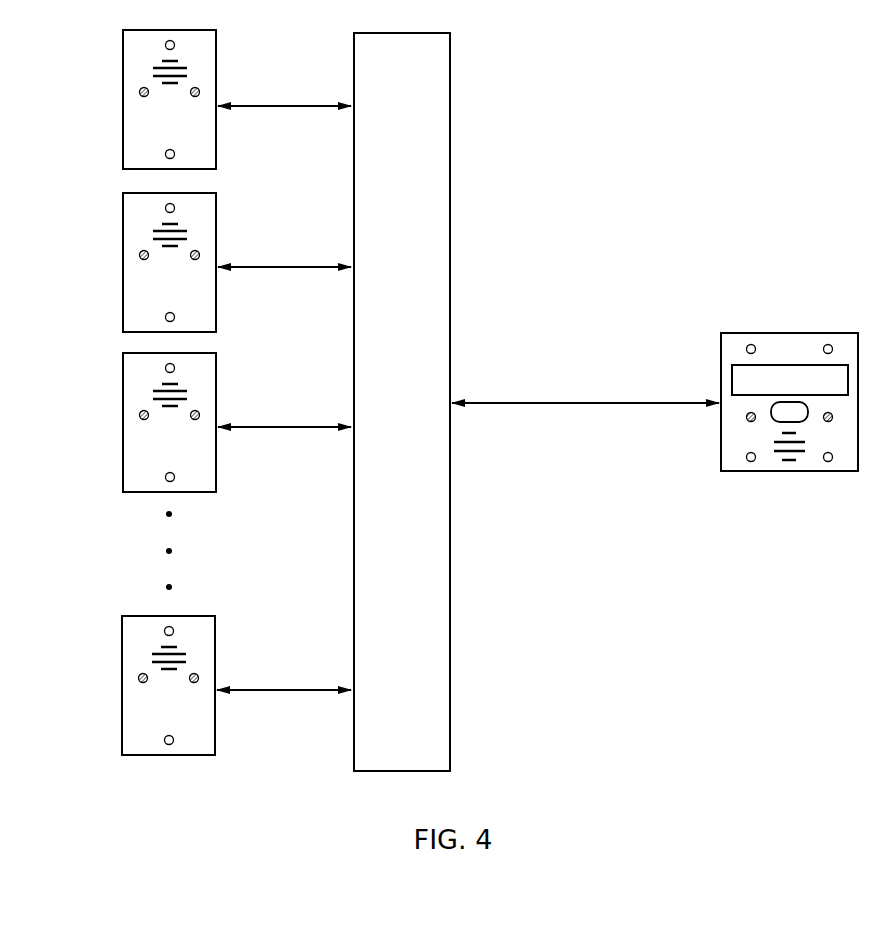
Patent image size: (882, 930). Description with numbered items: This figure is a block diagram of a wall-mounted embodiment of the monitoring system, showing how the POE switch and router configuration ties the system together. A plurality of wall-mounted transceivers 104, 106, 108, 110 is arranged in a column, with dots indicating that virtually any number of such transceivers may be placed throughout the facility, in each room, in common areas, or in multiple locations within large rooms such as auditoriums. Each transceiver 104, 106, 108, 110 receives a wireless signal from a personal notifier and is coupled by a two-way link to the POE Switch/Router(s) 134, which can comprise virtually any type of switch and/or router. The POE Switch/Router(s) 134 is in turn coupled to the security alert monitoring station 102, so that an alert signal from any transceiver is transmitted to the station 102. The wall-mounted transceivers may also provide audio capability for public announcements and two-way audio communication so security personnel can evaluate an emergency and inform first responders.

The security alert station 102 is at (786, 333).
The transceiver 104 is at (123, 106).
The transceiver 106 is at (123, 267).
The transceiver 108 is at (123, 427).
The transceiver 110 is at (122, 691).
The POE Switch/Router(s) 134 is at (450, 307).